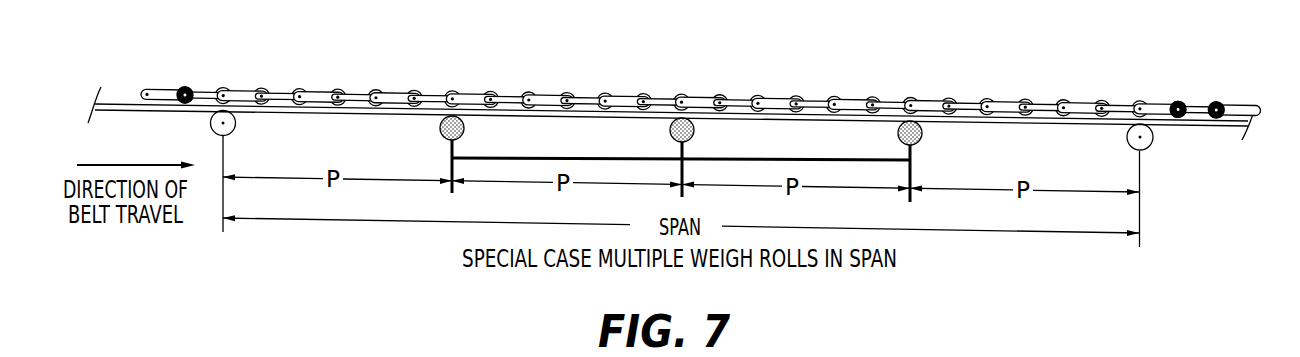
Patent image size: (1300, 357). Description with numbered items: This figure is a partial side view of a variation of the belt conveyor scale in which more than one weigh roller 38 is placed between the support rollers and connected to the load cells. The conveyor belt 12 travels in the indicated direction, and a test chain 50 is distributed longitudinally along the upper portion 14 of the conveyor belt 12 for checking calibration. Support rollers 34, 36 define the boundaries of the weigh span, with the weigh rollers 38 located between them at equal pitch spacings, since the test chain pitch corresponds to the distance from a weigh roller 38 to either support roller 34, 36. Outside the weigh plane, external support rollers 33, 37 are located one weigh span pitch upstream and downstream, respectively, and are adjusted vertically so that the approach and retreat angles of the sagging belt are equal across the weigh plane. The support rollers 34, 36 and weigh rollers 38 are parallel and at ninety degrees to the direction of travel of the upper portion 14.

The conveyor belt 12 is at (119, 100).
The upper portion 14 is at (1242, 117).
The test chain 50 is at (160, 89).
The external support roller 33 is at (210, 123).
The support roller 34 is at (440, 128).
The weigh roller 38 is at (670, 131).
The support roller 36 is at (898, 135).
The external support roller 37 is at (1127, 137).